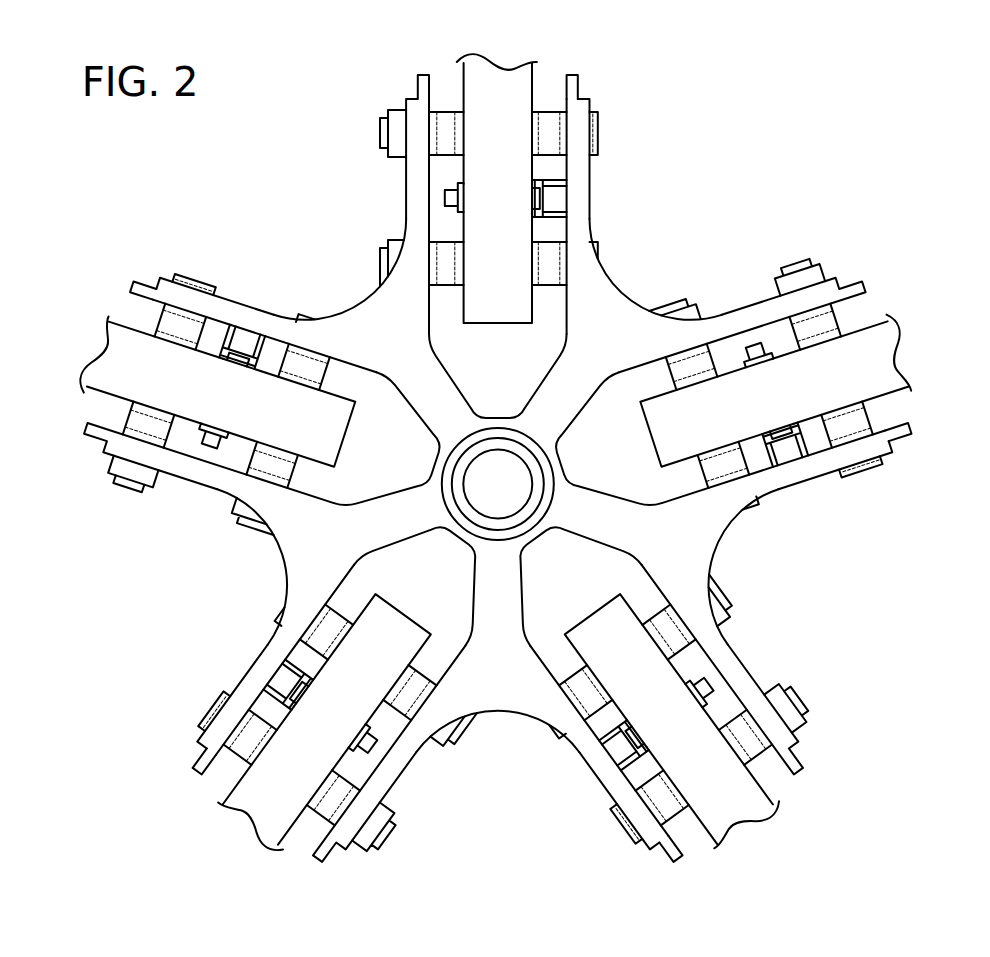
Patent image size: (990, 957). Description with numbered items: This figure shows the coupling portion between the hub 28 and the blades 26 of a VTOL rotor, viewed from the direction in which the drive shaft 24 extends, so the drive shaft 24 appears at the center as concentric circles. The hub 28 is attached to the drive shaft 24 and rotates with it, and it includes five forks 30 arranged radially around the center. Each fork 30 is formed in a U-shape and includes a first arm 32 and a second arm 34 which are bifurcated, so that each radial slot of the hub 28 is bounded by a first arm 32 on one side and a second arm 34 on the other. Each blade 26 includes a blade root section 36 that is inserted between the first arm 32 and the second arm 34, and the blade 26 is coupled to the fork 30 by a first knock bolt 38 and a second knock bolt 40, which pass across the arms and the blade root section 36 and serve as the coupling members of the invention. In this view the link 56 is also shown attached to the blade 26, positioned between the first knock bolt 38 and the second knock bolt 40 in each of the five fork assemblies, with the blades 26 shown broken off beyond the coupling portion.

The drive shaft 24 is at (498, 452).
The blade 26 is at (480, 455).
The hub 28 is at (524, 419).
The fork 30 is at (537, 456).
The first arm 32 is at (522, 474).
The second arm 34 is at (472, 472).
The blade root section 36 is at (489, 494).
The first knock bolt 38 is at (490, 509).
The second knock bolt 40 is at (509, 489).
The link 56 is at (518, 502).